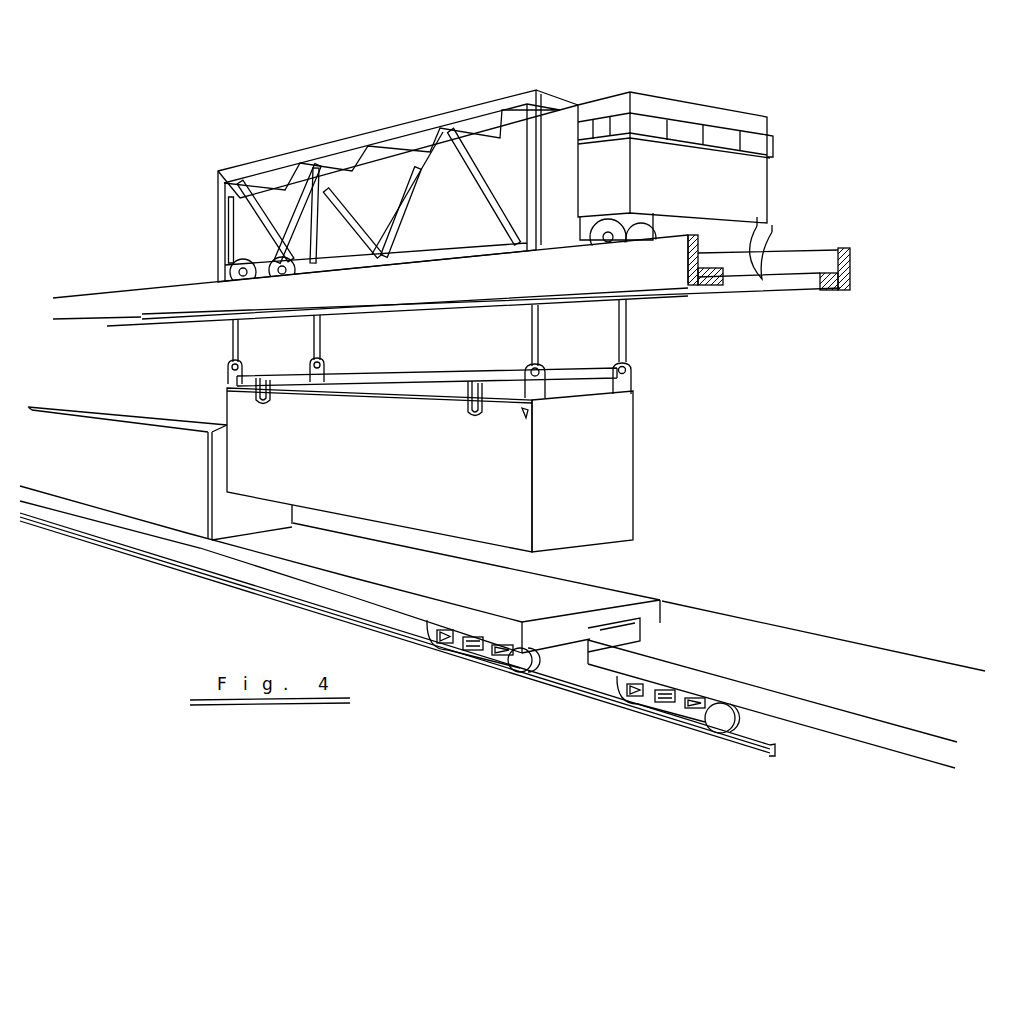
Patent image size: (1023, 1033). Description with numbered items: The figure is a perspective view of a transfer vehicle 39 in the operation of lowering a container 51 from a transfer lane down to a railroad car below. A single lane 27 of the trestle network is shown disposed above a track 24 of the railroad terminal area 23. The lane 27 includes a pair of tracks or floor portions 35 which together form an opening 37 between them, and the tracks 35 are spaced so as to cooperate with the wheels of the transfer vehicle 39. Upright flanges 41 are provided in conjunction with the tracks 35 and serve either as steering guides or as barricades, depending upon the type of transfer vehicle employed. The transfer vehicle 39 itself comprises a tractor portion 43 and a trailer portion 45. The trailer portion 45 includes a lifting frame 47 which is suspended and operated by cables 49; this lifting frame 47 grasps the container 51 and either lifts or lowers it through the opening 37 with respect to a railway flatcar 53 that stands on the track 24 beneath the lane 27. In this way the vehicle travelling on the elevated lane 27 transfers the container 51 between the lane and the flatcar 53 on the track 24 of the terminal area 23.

The railroad terminal area 23 is at (397, 634).
The track 24 is at (580, 697).
The lane 27 is at (148, 284).
The tracks or floor portions 35 is at (722, 270).
The opening 37 is at (786, 290).
The transfer vehicle 39 is at (495, 167).
The upright flanges 41 is at (866, 242).
The tractor portion 43 is at (710, 114).
The trailer portion 45 is at (356, 138).
The lifting frame 47 is at (405, 384).
The cables 49 is at (614, 358).
The container 51 is at (620, 475).
The railway flatcar 53 is at (623, 601).